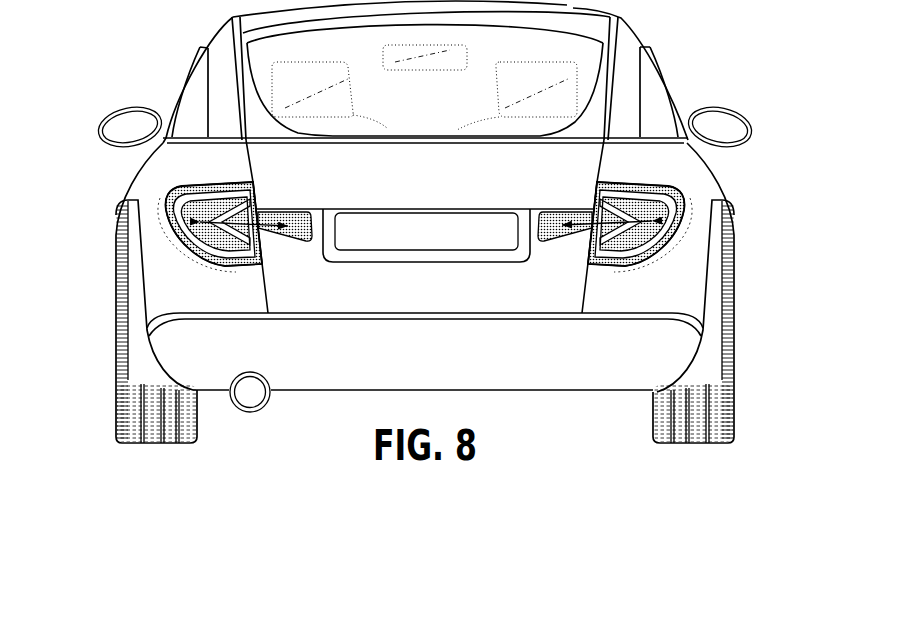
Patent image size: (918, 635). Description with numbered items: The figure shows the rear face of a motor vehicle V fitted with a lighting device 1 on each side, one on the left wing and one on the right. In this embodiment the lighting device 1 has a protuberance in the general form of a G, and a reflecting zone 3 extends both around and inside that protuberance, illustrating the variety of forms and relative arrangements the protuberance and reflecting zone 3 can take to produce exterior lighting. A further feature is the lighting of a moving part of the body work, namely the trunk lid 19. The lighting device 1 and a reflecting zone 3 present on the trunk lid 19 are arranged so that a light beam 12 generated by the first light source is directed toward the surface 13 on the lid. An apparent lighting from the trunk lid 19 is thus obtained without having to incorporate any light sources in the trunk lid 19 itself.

The lighting device 1 is at (170, 195).
The reflecting zone 3 is at (195, 224).
The light beam 12 is at (242, 235).
The surface 13 is at (557, 213).
The trunk lid 19 is at (550, 173).
The motor vehicle V is at (575, 362).